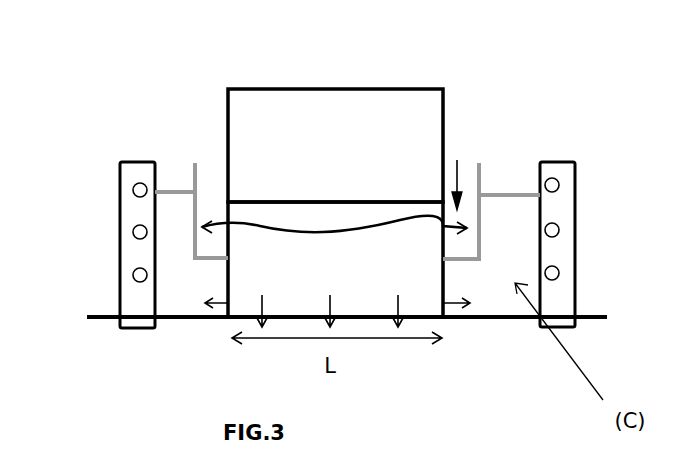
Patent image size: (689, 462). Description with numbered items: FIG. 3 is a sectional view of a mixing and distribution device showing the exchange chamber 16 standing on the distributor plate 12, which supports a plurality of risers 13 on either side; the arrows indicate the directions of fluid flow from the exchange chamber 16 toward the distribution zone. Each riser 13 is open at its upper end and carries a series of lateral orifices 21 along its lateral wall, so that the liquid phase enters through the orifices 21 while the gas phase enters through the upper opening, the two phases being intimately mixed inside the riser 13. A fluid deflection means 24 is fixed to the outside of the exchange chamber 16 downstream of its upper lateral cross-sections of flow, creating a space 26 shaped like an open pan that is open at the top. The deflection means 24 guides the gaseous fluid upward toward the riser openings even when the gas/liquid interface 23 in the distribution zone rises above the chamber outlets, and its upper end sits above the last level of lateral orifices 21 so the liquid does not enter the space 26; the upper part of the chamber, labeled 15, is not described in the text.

The distributor plate 12 is at (373, 317).
The risers 13 is at (118, 213).
The upper compartment 15 is at (313, 160).
The exchange chamber 16 is at (318, 264).
The lateral orifices 21 is at (557, 183).
The gas/liquid interface 23 is at (166, 190).
The fluid deflection means 24 is at (200, 213).
The space 26 is at (457, 167).